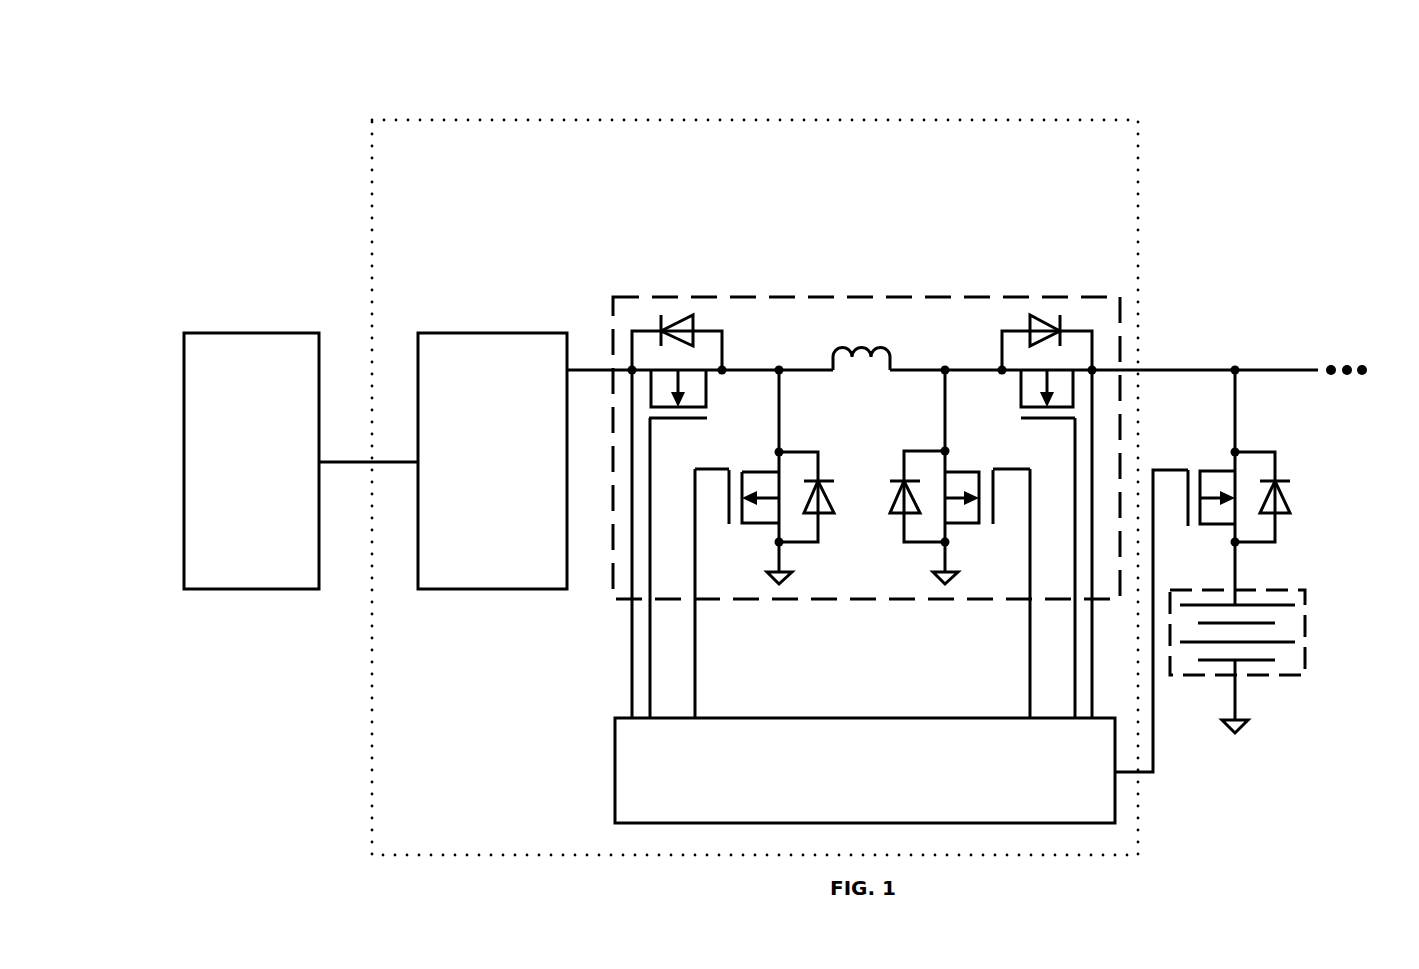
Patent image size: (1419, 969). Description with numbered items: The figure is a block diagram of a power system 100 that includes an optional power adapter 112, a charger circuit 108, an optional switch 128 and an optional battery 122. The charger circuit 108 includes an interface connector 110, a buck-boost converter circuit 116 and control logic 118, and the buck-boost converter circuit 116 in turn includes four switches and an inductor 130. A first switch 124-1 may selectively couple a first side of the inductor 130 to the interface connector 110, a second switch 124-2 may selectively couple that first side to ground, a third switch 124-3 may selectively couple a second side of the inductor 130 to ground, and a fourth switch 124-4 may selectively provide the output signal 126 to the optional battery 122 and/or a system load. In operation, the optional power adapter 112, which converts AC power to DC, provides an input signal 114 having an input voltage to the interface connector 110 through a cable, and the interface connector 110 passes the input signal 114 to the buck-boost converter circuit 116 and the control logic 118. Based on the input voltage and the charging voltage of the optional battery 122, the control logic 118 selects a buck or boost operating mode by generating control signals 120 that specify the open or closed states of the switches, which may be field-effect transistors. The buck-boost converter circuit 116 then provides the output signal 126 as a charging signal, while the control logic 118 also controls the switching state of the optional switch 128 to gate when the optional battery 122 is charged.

The power system 100 is at (323, 158).
The charger circuit 108 is at (350, 462).
The interface connector 110 is at (475, 497).
The optional power adapter 112 is at (235, 509).
The input signal 114 is at (587, 368).
The buck-boost converter circuit 116 is at (865, 297).
The control logic 118 is at (848, 806).
The control signals 120 is at (651, 689).
The optional battery 122 is at (1302, 615).
The first switch 124-1 is at (663, 421).
The second switch 124-2 is at (732, 480).
The third switch 124-3 is at (990, 470).
The fourth switch 124-4 is at (1022, 418).
The output signal 126 is at (1190, 370).
The optional switch 128 is at (1212, 470).
The inductor 130 is at (853, 342).